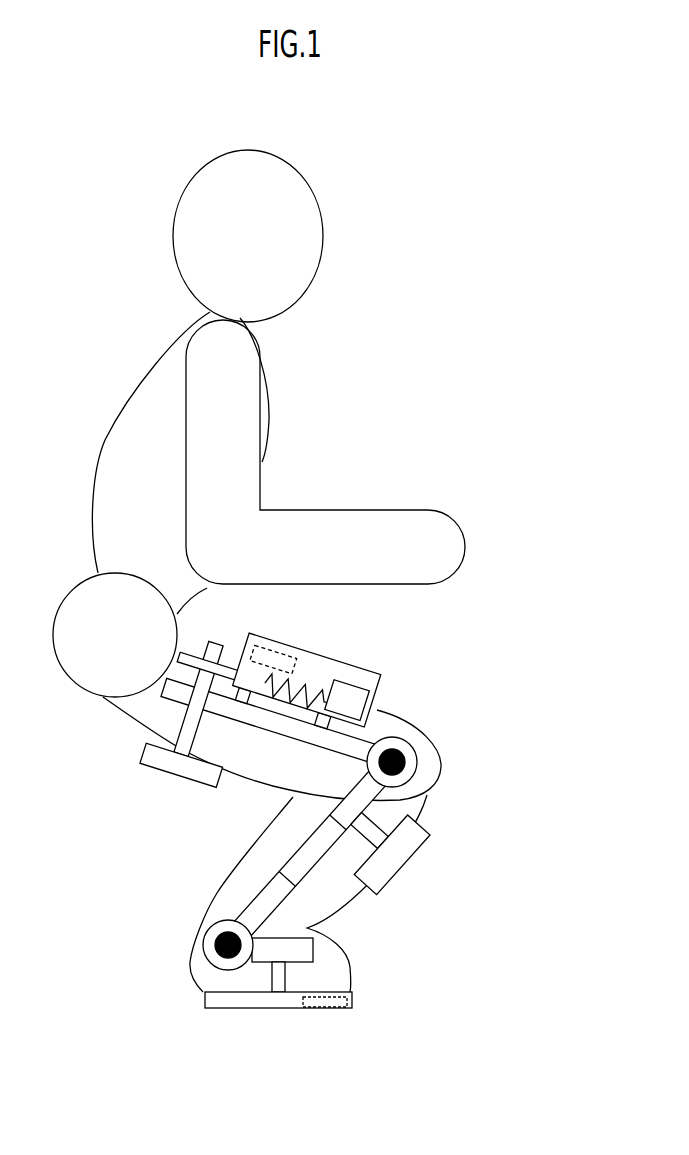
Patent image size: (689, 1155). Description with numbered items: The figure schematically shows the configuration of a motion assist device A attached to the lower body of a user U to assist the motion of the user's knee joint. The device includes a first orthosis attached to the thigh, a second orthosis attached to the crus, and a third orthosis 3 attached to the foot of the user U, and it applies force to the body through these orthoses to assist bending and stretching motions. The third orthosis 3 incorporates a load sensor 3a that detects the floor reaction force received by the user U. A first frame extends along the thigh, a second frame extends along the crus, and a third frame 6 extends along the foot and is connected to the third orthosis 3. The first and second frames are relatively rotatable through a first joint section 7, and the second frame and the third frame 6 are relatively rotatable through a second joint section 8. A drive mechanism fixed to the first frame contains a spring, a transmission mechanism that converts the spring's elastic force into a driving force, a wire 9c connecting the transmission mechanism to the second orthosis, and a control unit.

The user U is at (438, 218).
The motion assist device A is at (487, 684).
The third orthosis 3 is at (257, 1010).
The load sensor 3a is at (320, 1010).
The third frame 6 is at (314, 962).
The first joint section 7 is at (362, 762).
The second joint section 8 is at (203, 952).
The wire 9c is at (397, 738).